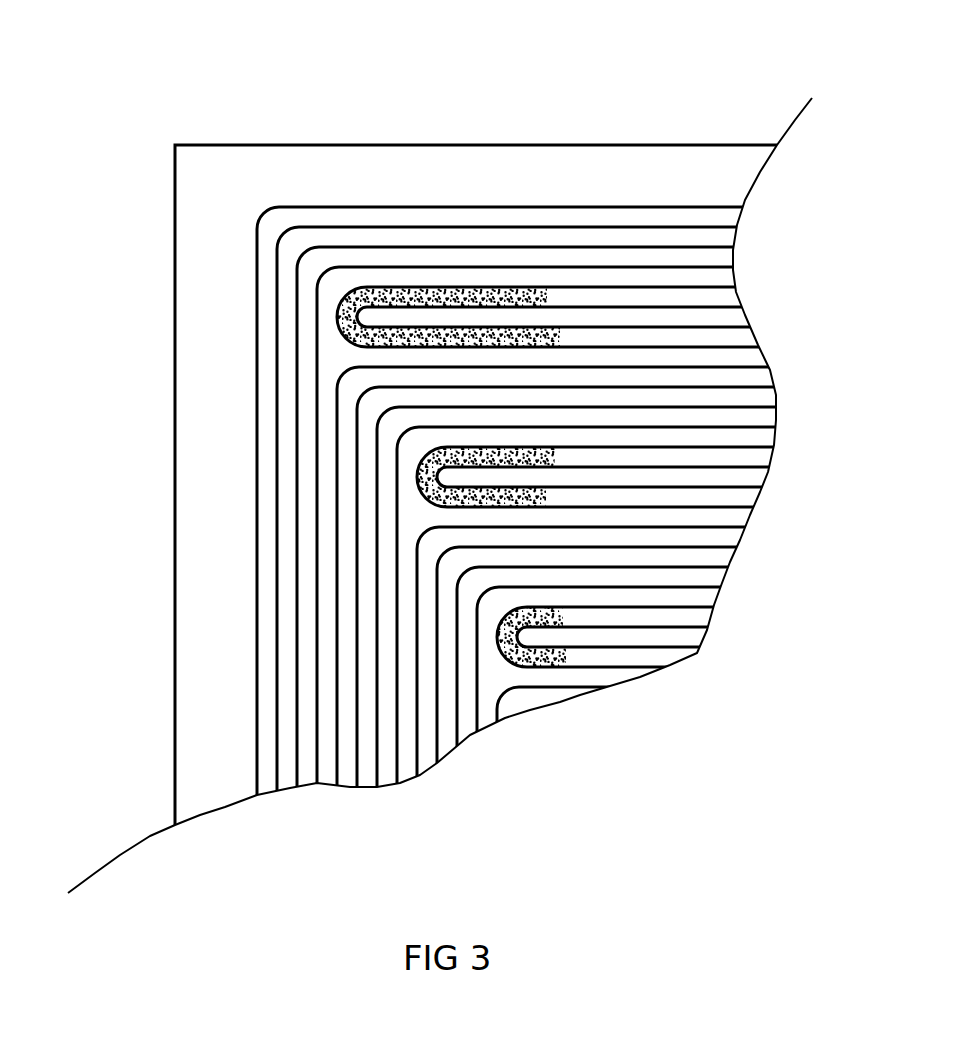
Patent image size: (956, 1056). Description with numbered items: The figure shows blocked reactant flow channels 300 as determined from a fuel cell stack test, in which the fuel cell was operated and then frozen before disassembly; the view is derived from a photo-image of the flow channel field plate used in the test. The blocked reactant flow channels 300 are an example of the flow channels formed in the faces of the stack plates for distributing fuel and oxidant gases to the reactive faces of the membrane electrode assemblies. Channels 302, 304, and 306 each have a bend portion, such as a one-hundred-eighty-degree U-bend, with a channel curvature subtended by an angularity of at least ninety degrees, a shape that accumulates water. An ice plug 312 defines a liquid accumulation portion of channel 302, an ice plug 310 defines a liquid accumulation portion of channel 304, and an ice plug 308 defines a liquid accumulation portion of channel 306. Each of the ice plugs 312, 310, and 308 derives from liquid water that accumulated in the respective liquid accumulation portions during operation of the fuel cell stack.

The blocked reactant flow channels 300 is at (648, 50).
The channel 302 is at (464, 301).
The channel 304 is at (468, 437).
The channel 306 is at (658, 697).
The ice plug 308 is at (498, 645).
The ice plug 310 is at (418, 480).
The ice plug 312 is at (337, 318).